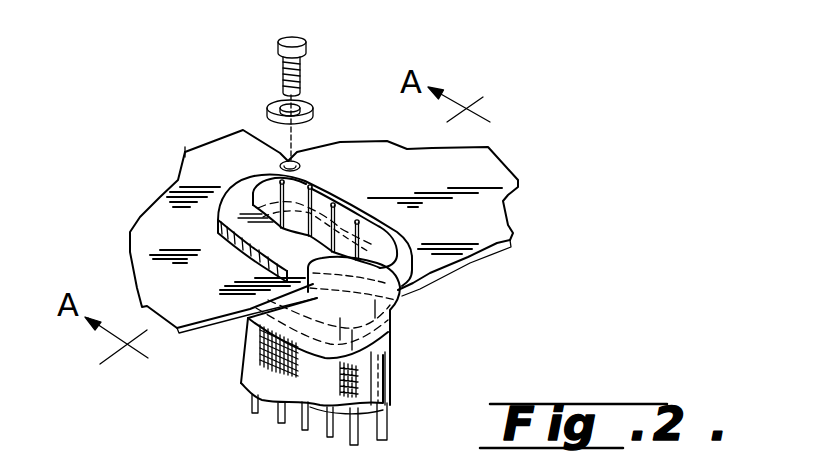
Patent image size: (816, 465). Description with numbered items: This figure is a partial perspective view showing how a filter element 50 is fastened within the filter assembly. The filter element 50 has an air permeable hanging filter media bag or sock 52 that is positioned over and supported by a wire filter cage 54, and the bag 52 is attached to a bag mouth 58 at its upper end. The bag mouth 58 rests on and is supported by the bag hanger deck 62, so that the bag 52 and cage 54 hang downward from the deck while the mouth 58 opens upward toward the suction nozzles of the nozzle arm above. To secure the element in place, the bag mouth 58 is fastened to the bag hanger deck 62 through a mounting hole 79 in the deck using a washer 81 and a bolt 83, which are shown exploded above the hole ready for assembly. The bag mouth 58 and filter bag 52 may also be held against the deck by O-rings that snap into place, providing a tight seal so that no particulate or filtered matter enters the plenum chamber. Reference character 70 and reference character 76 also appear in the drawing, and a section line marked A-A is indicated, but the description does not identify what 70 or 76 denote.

The filter element 50 is at (410, 370).
The filter media bag 52 is at (273, 380).
The filter cage 54 is at (380, 428).
The bag mouth 58 is at (336, 207).
The bag hanger deck 62 is at (477, 240).
The coil assembly 70 is at (356, 76).
The mounting plate 76 is at (215, 226).
The mounting hole 79 is at (304, 160).
The washer 81 is at (267, 110).
The bolt 83 is at (277, 68).